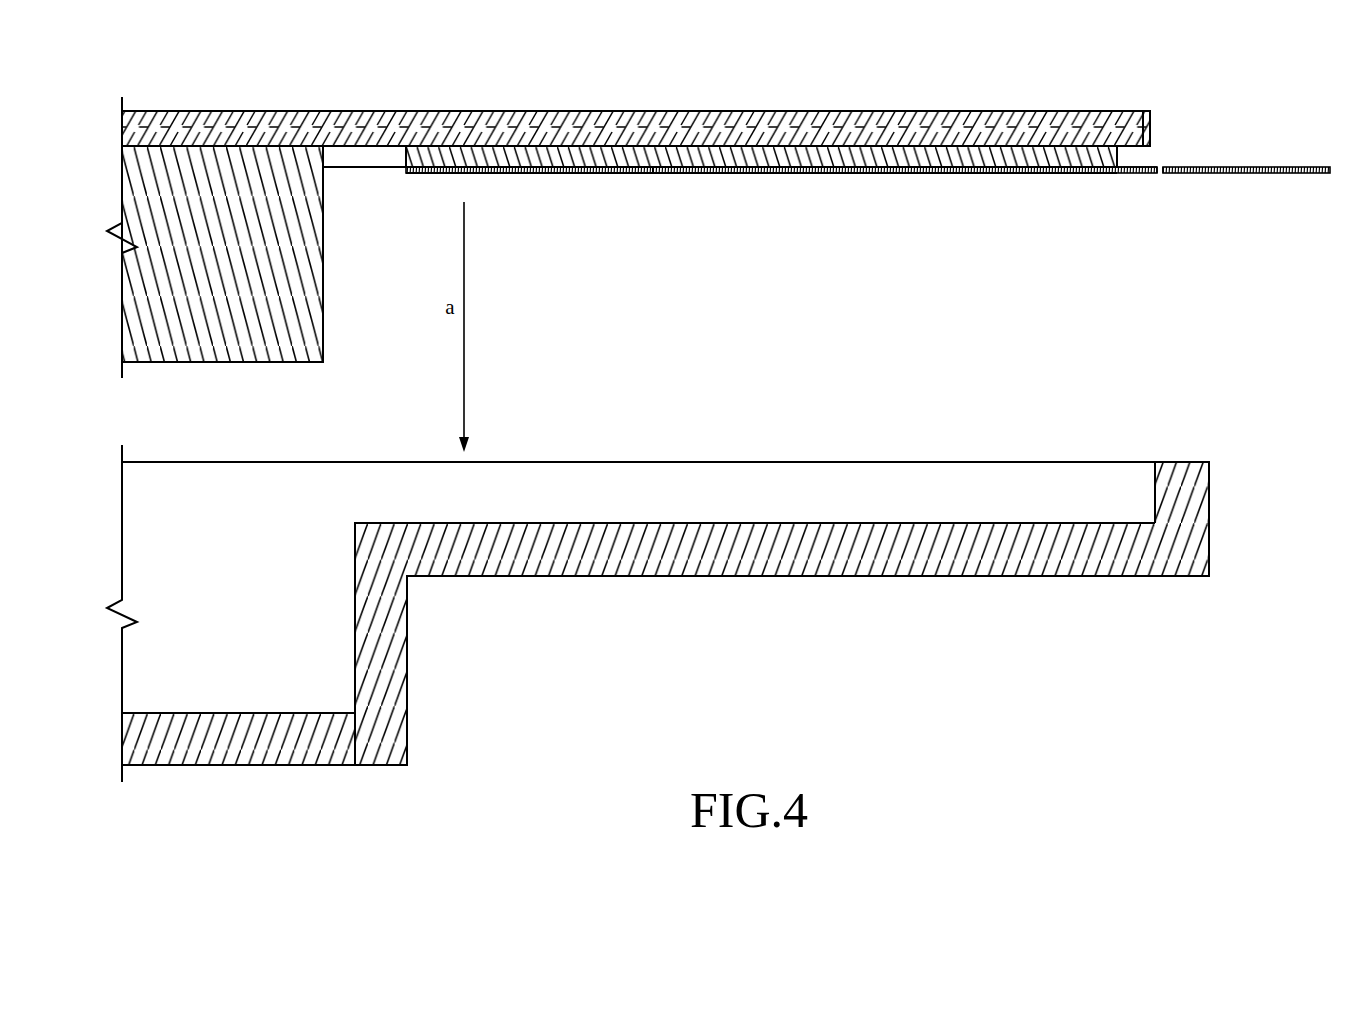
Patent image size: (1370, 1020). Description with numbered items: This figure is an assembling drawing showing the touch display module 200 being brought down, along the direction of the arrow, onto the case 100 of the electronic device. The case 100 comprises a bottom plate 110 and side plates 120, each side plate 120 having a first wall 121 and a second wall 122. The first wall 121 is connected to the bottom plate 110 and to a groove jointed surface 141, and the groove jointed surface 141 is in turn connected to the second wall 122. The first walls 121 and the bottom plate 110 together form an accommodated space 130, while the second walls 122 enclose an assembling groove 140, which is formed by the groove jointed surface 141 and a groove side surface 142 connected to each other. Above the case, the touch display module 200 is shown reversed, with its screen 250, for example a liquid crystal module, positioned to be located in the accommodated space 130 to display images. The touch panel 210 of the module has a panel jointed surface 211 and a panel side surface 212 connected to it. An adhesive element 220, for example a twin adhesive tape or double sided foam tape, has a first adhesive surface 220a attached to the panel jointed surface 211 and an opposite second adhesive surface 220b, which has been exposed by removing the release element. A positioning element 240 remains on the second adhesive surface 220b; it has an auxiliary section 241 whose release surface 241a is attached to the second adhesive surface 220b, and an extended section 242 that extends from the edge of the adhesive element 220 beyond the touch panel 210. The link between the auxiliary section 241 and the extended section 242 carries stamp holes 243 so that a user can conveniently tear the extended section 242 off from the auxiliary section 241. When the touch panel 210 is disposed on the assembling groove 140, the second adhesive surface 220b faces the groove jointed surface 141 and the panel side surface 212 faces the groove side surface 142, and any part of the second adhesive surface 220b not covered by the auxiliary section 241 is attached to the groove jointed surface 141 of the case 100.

The case 100 is at (723, 623).
The bottom plate 110 is at (291, 750).
The side plate 120 is at (847, 593).
The first wall 121 is at (380, 657).
The second wall 122 is at (1176, 539).
The accommodated space 130 is at (252, 566).
The assembling groove 140 is at (1001, 478).
The groove jointed surface 141 is at (884, 508).
The groove side surface 142 is at (1144, 482).
The touch display module 200 is at (718, 218).
The touch panel 210 is at (682, 138).
The panel jointed surface 211 is at (993, 173).
The panel side surface 212 is at (1165, 120).
The adhesive element 220 is at (761, 157).
The first adhesive surface 220a is at (895, 137).
The second adhesive surface 220b is at (898, 182).
The positioning element 240 is at (868, 172).
The auxiliary section 241 is at (809, 173).
The release surface 241a is at (1045, 152).
The extended section 242 is at (1192, 174).
The stamp holes 243 is at (1153, 170).
The screen 250 is at (286, 358).